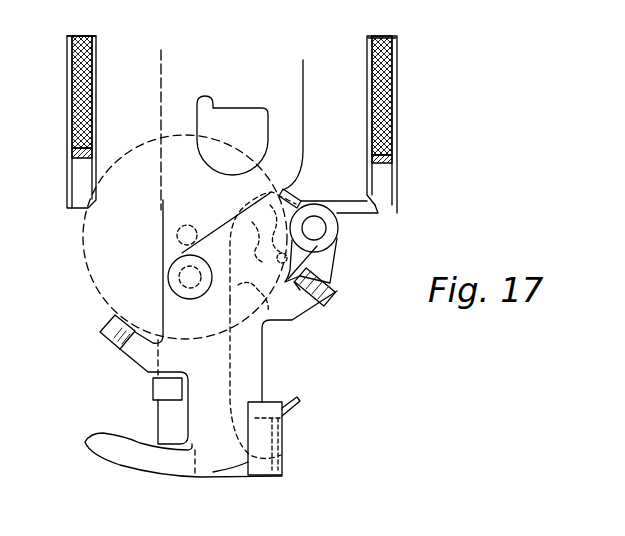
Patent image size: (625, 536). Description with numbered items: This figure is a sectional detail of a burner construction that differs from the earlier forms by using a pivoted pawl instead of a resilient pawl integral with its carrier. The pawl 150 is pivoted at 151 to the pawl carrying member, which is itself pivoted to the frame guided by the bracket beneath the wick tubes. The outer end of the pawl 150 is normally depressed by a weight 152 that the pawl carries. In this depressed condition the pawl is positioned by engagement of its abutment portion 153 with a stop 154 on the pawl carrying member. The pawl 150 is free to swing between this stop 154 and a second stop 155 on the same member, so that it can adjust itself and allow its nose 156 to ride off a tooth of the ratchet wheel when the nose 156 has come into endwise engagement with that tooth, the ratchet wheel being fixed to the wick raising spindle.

The pawl 150 is at (326, 240).
The pivot 151 is at (272, 252).
The weight 152 is at (338, 227).
The abutment portion 153 is at (330, 268).
The stop 154 is at (337, 290).
The second stop 155 is at (300, 197).
The nose 156 is at (308, 296).